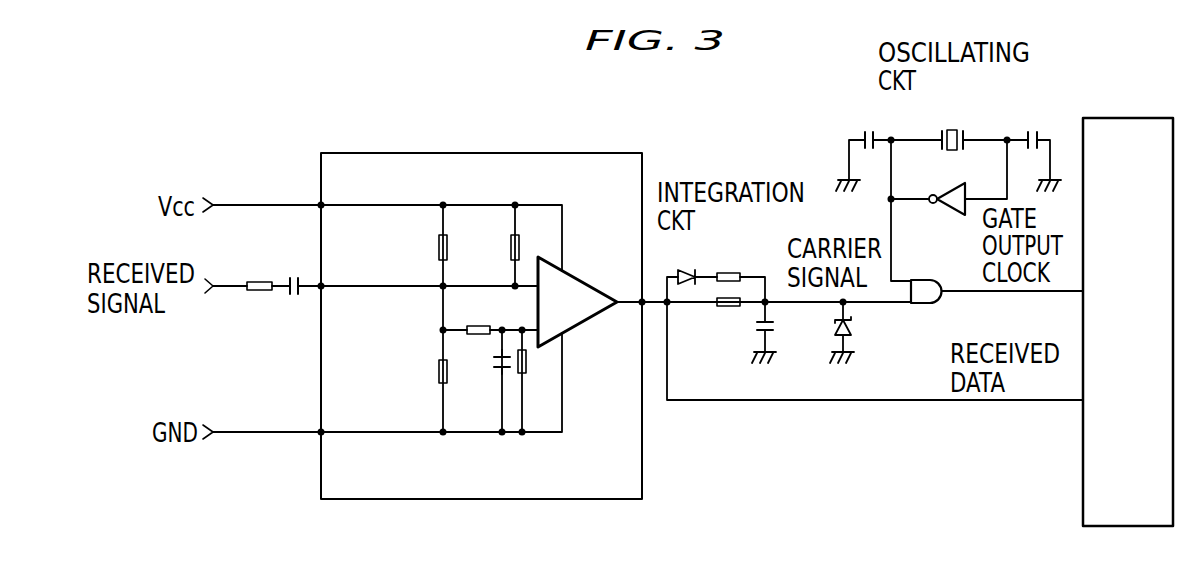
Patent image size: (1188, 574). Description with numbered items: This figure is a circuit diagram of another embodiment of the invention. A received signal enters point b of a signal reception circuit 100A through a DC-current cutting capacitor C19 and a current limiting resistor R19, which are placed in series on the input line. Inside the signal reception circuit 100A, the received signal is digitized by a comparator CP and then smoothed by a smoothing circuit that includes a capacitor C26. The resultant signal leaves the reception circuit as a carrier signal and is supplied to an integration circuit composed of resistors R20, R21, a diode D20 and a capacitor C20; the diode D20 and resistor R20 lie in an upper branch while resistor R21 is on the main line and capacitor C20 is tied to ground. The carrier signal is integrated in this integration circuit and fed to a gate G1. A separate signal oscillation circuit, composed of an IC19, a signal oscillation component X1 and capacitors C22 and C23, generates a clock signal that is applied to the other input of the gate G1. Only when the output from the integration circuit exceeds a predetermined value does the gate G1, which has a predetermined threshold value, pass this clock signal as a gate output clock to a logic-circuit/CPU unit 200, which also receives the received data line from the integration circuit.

The signal reception circuit 100A is at (427, 153).
The logic-circuit/CPU unit 200 is at (1110, 118).
The current limiting resistor R19 is at (261, 270).
The DC-current cutting capacitor C19 is at (294, 283).
The comparator CP is at (588, 277).
The capacitor C26 is at (490, 362).
The diode D20 is at (688, 259).
The resistor R20 is at (737, 262).
The resistor R21 is at (733, 318).
The capacitor C20 is at (782, 332).
The capacitor C22 is at (871, 125).
The signal oscillation component X1 is at (958, 123).
The capacitor C23 is at (1034, 125).
The IC IC19 is at (949, 184).
The gate G1 is at (917, 280).